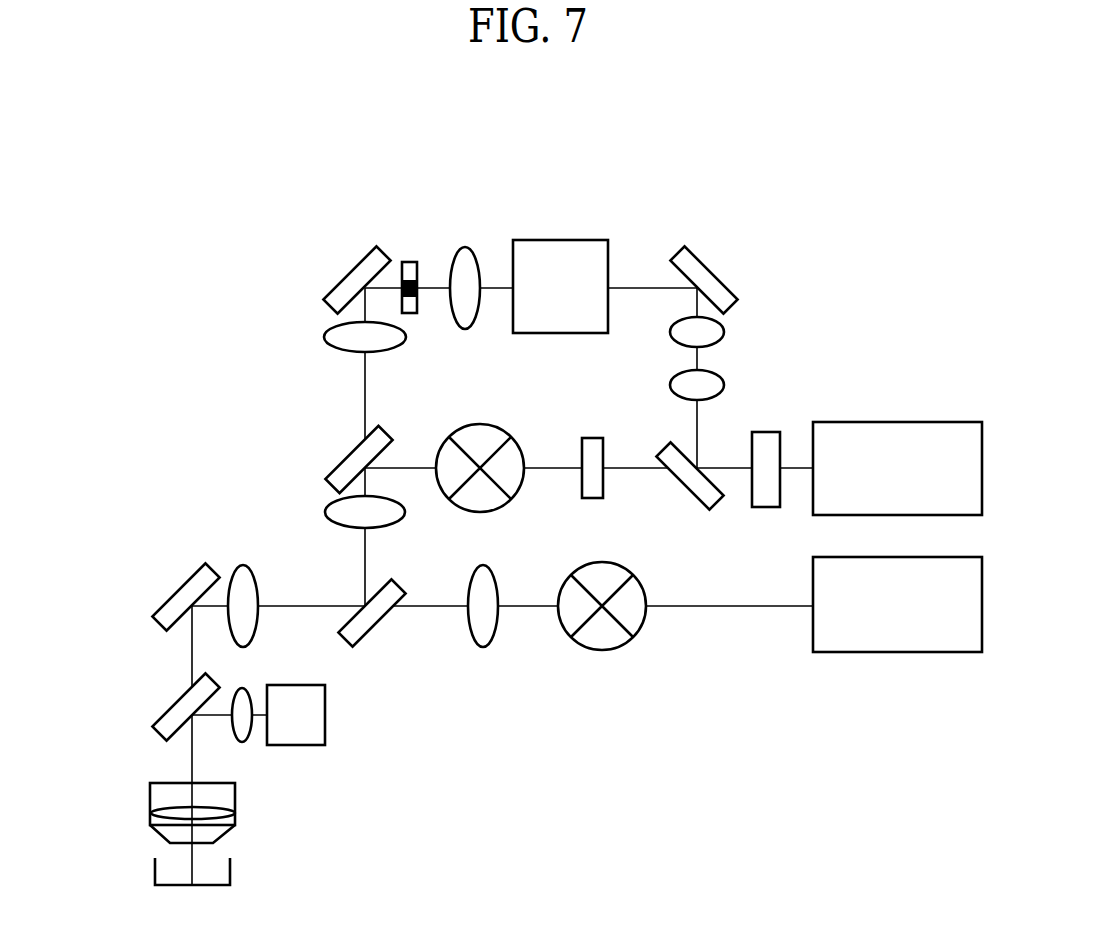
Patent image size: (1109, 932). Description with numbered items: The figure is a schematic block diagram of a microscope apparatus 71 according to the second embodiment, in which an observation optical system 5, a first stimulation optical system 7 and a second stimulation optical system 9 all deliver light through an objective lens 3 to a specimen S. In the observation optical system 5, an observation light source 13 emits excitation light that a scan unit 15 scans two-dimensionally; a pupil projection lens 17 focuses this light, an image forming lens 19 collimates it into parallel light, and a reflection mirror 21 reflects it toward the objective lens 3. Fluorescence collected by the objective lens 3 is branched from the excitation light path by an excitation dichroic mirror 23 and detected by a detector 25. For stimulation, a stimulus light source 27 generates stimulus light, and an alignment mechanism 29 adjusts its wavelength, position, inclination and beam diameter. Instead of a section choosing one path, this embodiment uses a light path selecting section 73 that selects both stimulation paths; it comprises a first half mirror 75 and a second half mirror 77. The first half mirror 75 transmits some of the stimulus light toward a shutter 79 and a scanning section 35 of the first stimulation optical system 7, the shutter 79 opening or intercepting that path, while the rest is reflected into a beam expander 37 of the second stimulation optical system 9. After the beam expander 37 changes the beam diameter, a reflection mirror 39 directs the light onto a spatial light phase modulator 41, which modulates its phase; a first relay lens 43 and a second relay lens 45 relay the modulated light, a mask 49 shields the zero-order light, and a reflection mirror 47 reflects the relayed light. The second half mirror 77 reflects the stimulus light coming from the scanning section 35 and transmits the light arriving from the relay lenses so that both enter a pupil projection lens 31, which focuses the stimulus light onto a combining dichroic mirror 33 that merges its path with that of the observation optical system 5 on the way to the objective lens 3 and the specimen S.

The microscope apparatus 71 is at (137, 232).
The second stimulation optical system 9 is at (649, 199).
The reflection mirror 47 is at (358, 265).
The mask 49 is at (409, 262).
The first relay lens 43 is at (463, 246).
The spatial light phase modulator 41 is at (557, 240).
The reflection mirror 39 is at (713, 270).
The beam expander 37 is at (733, 317).
The second relay lens 45 is at (324, 337).
The light path selecting section 73 is at (215, 457).
The second half mirror 77 is at (337, 468).
The pupil projection lens 31 is at (325, 512).
The scanning section 35 is at (481, 424).
The first stimulation optical system 7 is at (620, 408).
The shutter 79 is at (589, 438).
The first half mirror 75 is at (698, 503).
The alignment mechanism 29 is at (767, 507).
The stimulus light source 27 is at (897, 422).
The observation optical system 5 is at (711, 714).
The observation light source 13 is at (895, 652).
The scan unit 15 is at (602, 650).
The pupil projection lens 17 is at (483, 648).
The combining dichroic mirror 33 is at (363, 637).
The image forming lens 19 is at (240, 565).
The reflection mirror 21 is at (172, 592).
The excitation dichroic mirror 23 is at (162, 713).
The detector 25 is at (297, 745).
The objective lens 3 is at (150, 800).
The specimen S is at (155, 866).